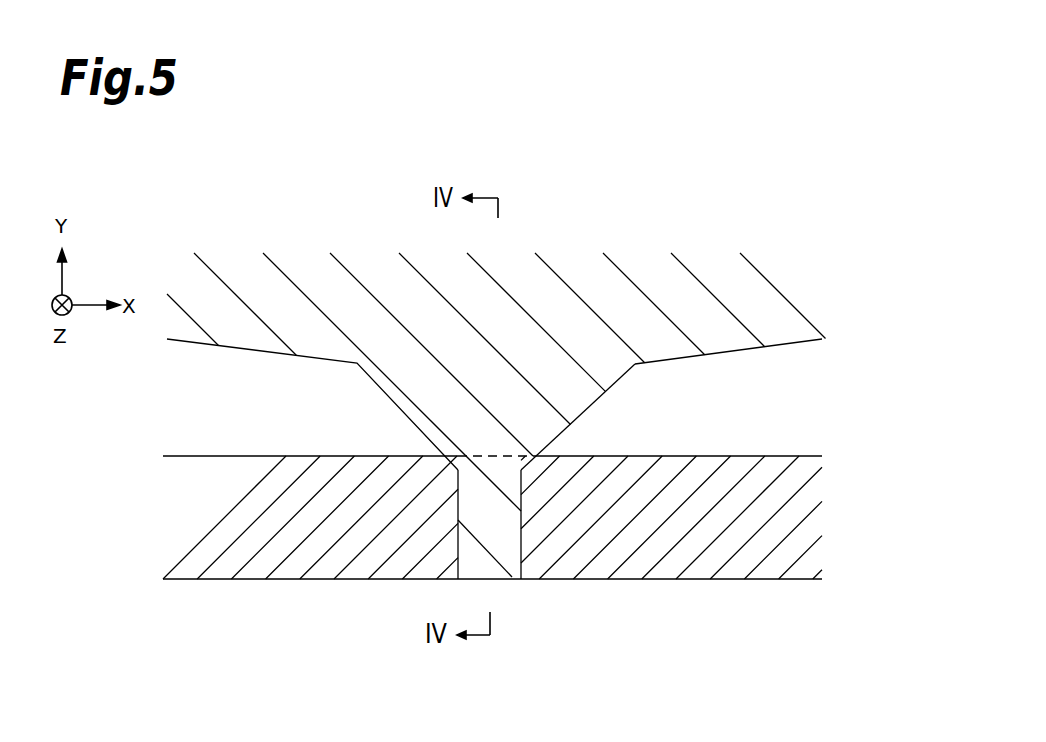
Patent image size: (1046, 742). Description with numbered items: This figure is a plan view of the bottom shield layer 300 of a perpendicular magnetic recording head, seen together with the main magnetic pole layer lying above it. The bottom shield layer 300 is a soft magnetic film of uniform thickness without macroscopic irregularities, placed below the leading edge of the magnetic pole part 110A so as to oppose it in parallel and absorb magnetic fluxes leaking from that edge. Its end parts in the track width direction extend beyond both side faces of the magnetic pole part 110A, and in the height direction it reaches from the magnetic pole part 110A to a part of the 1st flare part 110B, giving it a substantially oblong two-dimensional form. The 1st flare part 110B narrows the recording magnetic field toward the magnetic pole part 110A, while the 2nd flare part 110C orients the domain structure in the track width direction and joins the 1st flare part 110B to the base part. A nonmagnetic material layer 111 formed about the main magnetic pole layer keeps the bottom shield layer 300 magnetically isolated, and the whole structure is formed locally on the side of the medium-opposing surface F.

The 2nd flare part 110C is at (232, 334).
The 1st flare part 110B is at (417, 403).
The magnetic pole part 110A is at (497, 553).
The nonmagnetic material layer 111 is at (748, 412).
The bottom shield layer 300 is at (655, 553).
The medium-opposing surface F is at (770, 592).